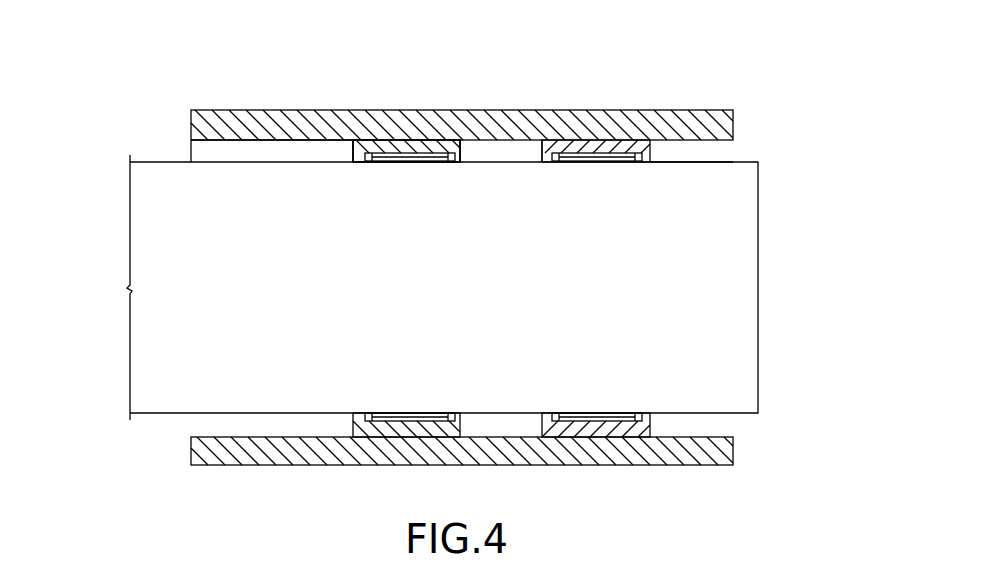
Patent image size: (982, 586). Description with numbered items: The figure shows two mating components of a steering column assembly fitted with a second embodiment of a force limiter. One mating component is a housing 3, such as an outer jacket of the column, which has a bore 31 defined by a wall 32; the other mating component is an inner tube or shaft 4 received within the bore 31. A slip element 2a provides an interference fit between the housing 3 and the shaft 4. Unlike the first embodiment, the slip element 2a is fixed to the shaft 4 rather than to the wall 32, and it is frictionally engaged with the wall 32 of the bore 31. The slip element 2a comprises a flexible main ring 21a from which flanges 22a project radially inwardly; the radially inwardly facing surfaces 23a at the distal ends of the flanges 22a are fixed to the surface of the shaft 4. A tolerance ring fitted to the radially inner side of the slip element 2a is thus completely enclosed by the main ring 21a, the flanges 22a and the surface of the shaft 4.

The inner tube 4 is at (592, 353).
The housing 3 is at (707, 125).
The wall 32 is at (215, 112).
The bore 31 is at (717, 149).
The slip element 2a is at (416, 142).
The flexible main ring 21a is at (375, 148).
The flanges 22a is at (330, 112).
The radially inwardly facing surfaces 23a is at (357, 163).